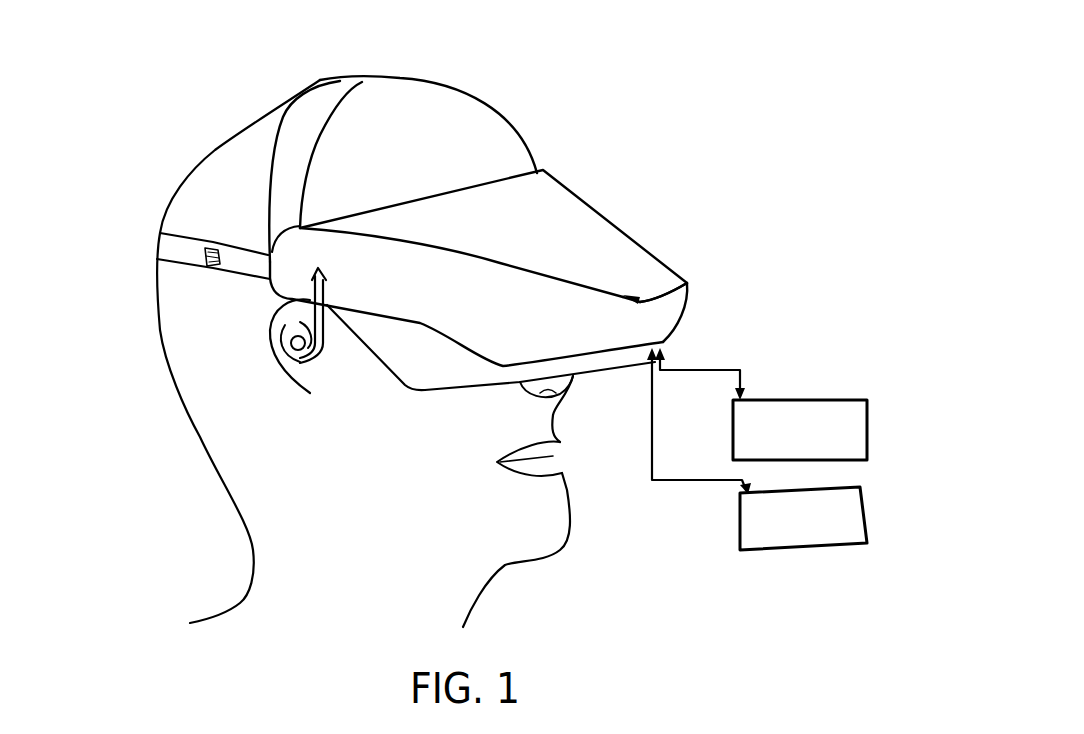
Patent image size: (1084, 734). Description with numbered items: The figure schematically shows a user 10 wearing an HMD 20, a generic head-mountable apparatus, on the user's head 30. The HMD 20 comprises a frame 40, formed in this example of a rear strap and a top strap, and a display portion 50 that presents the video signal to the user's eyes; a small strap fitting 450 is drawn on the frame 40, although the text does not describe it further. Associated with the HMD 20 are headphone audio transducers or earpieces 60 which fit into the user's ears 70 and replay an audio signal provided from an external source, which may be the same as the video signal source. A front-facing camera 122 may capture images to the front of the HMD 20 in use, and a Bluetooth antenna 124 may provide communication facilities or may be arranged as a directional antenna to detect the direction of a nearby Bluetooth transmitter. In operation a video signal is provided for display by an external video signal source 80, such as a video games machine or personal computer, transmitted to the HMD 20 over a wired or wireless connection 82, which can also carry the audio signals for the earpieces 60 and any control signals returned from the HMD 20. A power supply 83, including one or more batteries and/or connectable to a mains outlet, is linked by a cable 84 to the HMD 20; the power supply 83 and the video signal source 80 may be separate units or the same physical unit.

The user 10 is at (138, 452).
The HMD 20 is at (626, 218).
The user's head 30 is at (161, 329).
The frame 40 is at (160, 242).
The strap adjuster 450 is at (212, 248).
The display portion 50 is at (663, 262).
The earpieces 60 is at (327, 357).
The ears 70 is at (270, 331).
The external video signal source 80 is at (838, 400).
The wired or wireless connection 82 is at (707, 370).
The power supply 83 is at (867, 517).
The cable 84 is at (680, 483).
The front-facing camera 122 is at (687, 290).
The Bluetooth antenna 124 is at (313, 117).